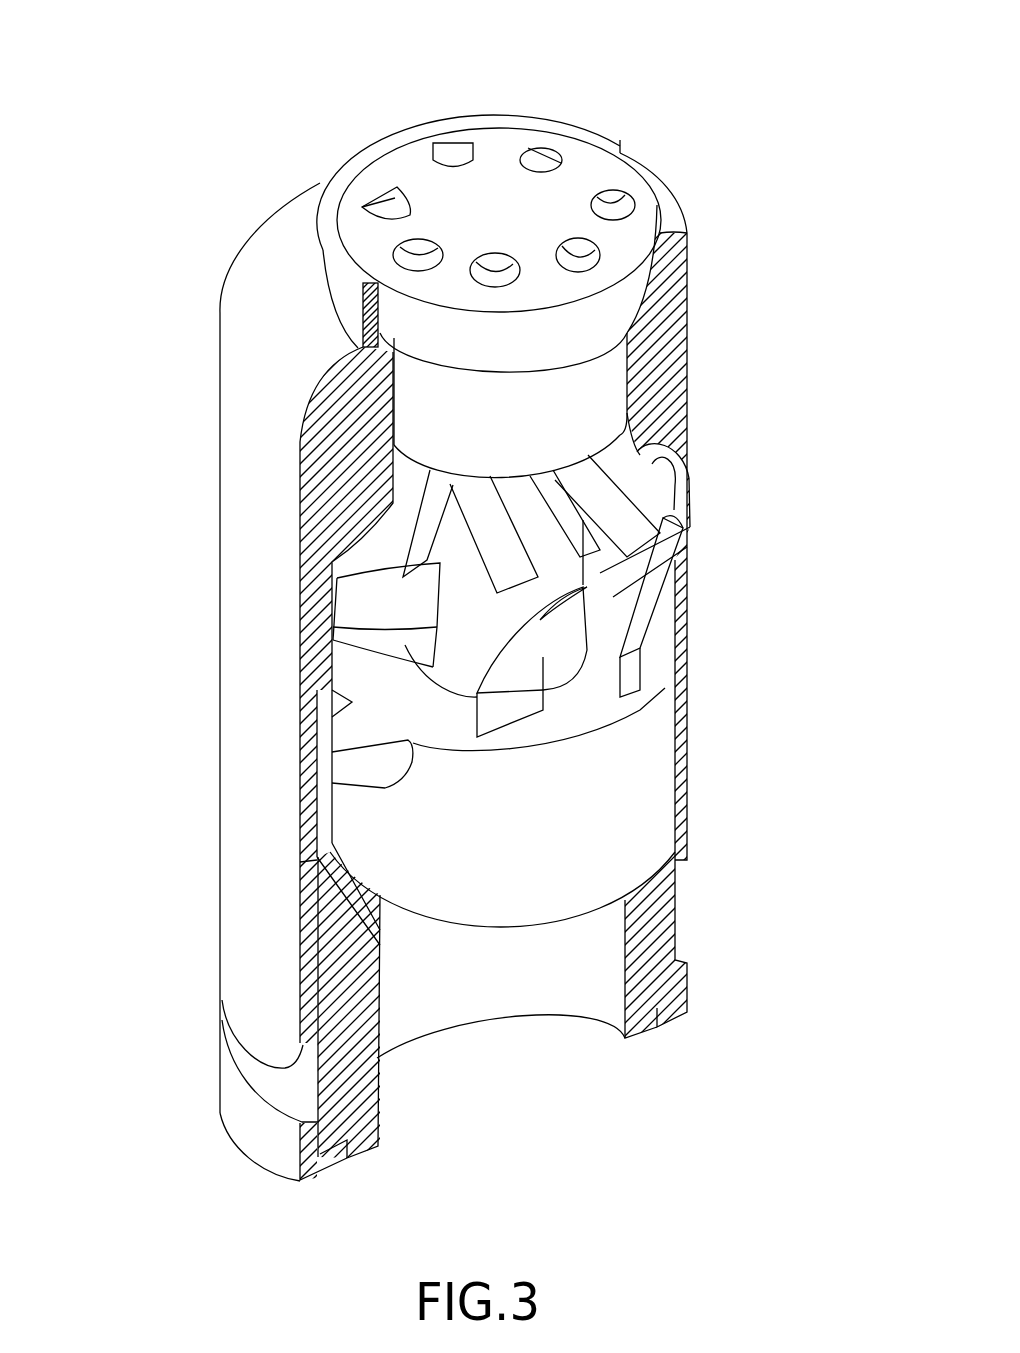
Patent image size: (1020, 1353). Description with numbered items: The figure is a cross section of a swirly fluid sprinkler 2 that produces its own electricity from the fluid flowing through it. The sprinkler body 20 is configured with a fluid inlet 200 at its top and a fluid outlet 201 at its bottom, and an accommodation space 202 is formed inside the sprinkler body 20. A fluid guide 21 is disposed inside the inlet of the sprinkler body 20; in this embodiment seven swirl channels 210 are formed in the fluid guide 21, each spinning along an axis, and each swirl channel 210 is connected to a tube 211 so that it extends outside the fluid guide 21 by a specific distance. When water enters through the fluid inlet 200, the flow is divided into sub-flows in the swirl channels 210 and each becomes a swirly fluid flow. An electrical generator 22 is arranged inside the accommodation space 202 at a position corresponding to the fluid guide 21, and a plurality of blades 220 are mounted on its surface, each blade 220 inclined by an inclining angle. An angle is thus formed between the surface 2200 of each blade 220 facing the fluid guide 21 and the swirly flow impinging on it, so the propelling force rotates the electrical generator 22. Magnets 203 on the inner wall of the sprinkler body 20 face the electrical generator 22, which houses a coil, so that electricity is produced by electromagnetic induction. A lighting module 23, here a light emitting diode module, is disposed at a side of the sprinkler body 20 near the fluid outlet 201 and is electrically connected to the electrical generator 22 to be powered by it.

The swirly fluid sprinkler 2 is at (220, 147).
The sprinkler body 20 is at (253, 387).
The fluid inlet 200 is at (367, 313).
The fluid outlet 201 is at (540, 1062).
The accommodation space 202 is at (513, 986).
The magnets 203 is at (325, 858).
The fluid guide 21 is at (407, 177).
The swirl channels 210 is at (620, 203).
The tube 211 is at (607, 493).
The electrical generator 22 is at (413, 715).
The blades 220 is at (665, 650).
The surface of blade 2200 is at (660, 550).
The lighting module 23 is at (302, 1067).